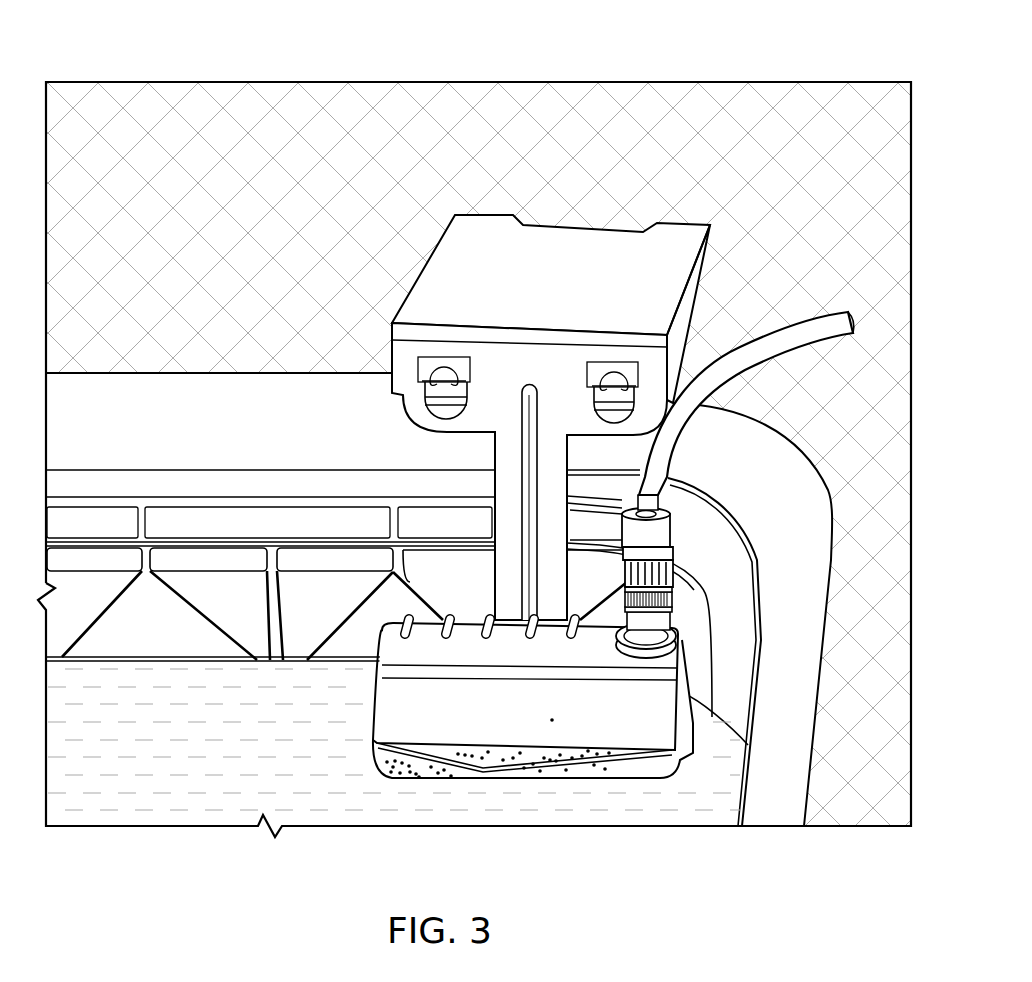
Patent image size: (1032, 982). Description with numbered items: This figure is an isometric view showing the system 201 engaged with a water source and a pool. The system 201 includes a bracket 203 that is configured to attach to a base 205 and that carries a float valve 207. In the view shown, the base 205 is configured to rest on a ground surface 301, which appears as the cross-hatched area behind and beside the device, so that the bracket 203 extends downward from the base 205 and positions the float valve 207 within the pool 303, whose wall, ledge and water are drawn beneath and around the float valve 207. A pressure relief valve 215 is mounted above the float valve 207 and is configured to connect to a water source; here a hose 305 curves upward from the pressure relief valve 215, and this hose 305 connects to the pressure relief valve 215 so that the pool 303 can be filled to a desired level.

The system 201 is at (583, 443).
The bracket 203 is at (493, 525).
The base 205 is at (410, 285).
The float valve 207 is at (377, 693).
The pressure relief valve 215 is at (675, 565).
The ground surface 301 is at (285, 124).
The pool 303 is at (233, 575).
The hose 305 is at (758, 362).